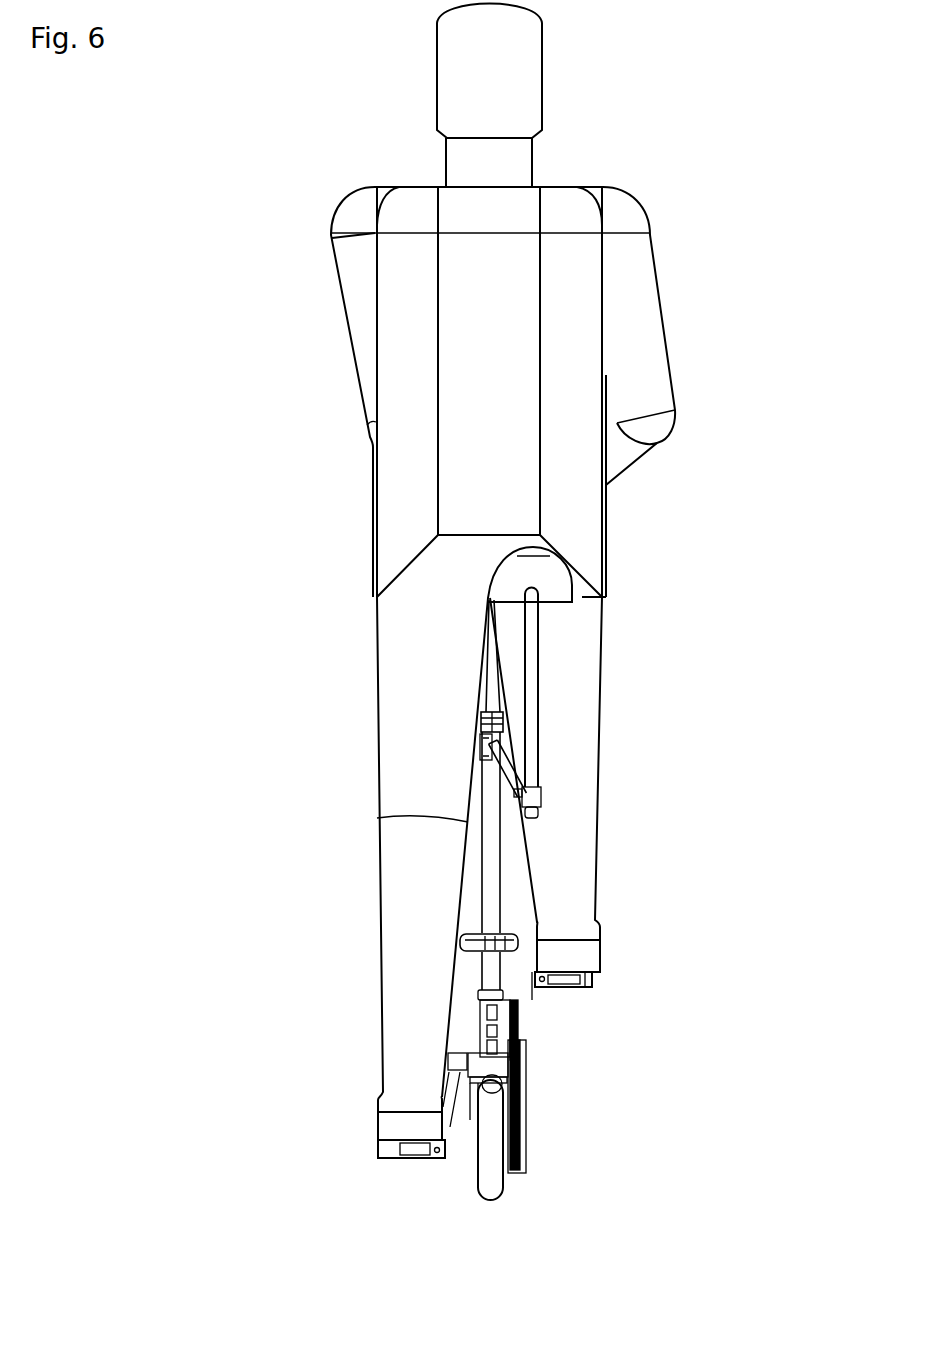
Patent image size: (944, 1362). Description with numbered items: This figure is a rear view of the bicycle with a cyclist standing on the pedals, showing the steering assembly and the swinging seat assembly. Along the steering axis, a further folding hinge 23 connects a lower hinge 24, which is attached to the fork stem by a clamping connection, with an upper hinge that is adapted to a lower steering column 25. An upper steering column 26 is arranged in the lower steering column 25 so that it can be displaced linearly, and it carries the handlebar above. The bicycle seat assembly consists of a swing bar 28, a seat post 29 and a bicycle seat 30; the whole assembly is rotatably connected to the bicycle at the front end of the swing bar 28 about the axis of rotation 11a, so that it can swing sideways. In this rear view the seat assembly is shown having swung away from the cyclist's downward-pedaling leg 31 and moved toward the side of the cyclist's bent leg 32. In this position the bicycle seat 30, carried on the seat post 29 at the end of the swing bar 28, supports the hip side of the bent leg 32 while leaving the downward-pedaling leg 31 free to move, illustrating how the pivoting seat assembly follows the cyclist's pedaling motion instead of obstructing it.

The axis of rotation 11a is at (482, 735).
The further folding hinge 23 is at (470, 948).
The lower hinge 24 is at (490, 977).
The lower steering column 25 is at (497, 862).
The upper steering column 26 is at (490, 672).
The swing bar 28 is at (505, 767).
The seat post 29 is at (533, 663).
The bicycle seat 30 is at (540, 575).
The downward-pedaling leg 31 is at (423, 903).
The bent leg 32 is at (562, 823).